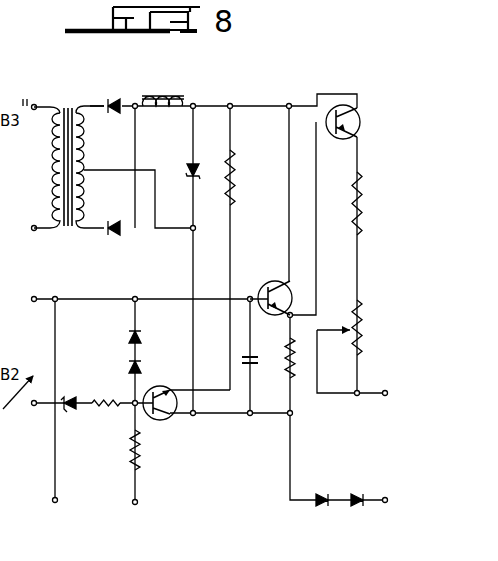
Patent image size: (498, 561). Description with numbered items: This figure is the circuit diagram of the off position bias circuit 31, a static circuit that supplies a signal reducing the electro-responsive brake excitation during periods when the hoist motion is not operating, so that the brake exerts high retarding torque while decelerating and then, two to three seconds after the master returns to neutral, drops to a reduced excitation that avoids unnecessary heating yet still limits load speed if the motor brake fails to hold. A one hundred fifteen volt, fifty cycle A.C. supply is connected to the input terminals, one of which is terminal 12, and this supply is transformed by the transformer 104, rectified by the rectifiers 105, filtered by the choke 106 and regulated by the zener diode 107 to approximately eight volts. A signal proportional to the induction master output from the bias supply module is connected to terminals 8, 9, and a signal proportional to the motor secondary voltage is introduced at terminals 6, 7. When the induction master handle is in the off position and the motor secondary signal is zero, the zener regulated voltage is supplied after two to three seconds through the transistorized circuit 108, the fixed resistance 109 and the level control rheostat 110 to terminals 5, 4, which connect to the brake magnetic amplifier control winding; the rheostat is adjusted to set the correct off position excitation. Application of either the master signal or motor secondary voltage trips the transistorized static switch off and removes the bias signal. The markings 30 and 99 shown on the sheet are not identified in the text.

The transformer 104 is at (74, 103).
The rectifiers 105 is at (115, 112).
The choke 106 is at (176, 97).
The zener diode 107 is at (192, 178).
The transistorized circuit 108 is at (360, 112).
The fixed resistance 109 is at (363, 203).
The level control rheostat 110 is at (350, 325).
The off position bias circuit 31 is at (279, 73).
The circuit board 30 is at (10, 322).
The lead 99 is at (0, 152).
The terminal 8 is at (21, 300).
The terminal 9 is at (21, 405).
The terminal 12 is at (21, 231).
The terminal 7 is at (55, 519).
The terminal 6 is at (133, 521).
The terminal 4 is at (399, 396).
The terminal 5 is at (398, 501).